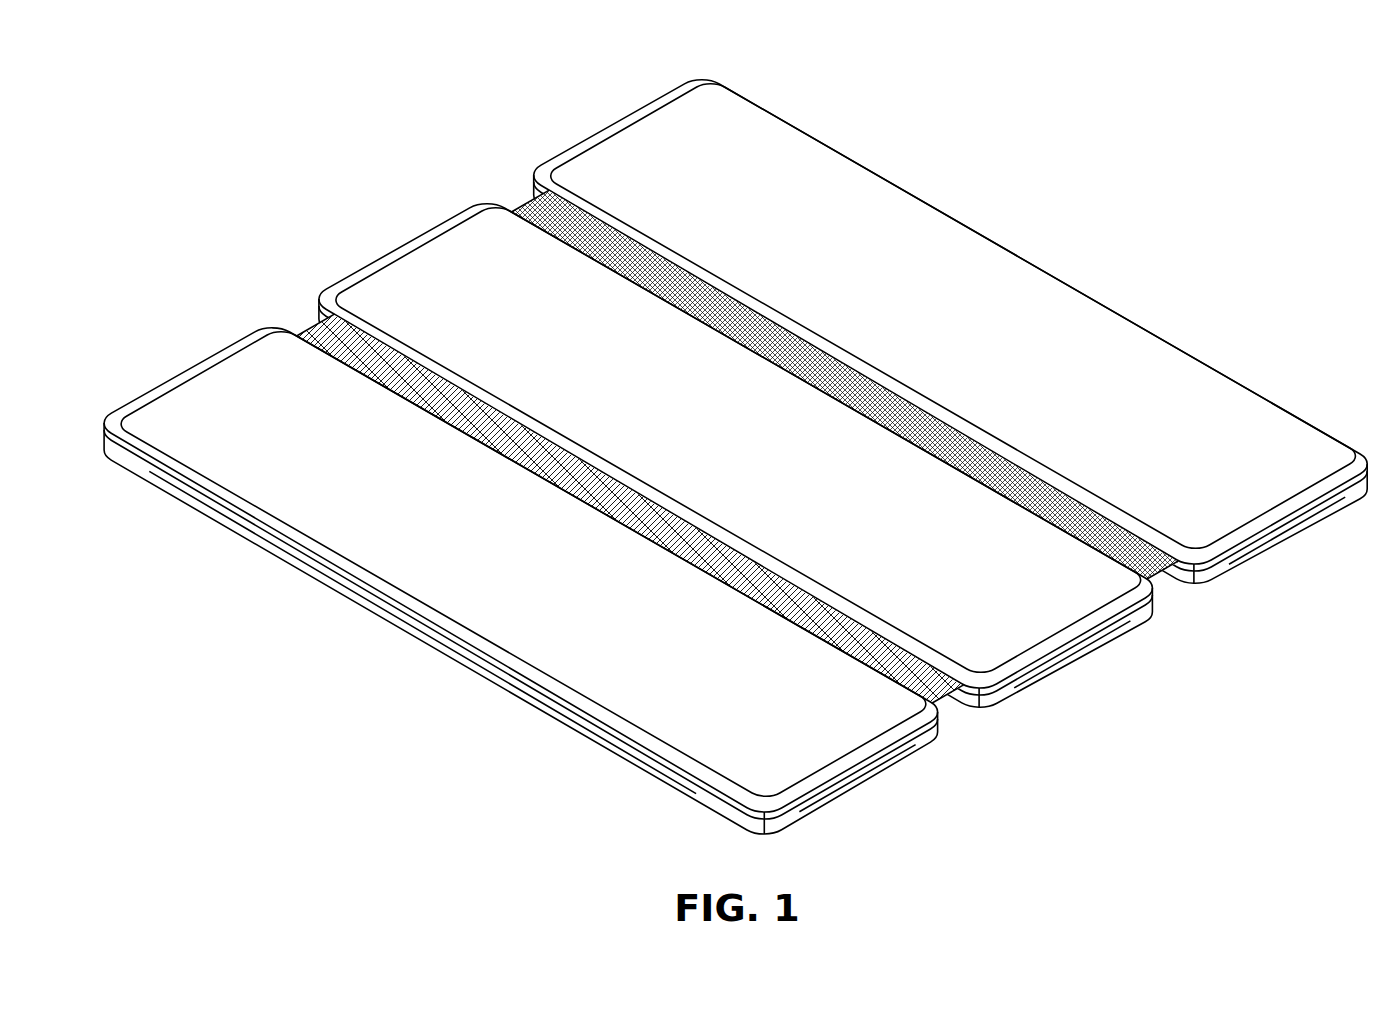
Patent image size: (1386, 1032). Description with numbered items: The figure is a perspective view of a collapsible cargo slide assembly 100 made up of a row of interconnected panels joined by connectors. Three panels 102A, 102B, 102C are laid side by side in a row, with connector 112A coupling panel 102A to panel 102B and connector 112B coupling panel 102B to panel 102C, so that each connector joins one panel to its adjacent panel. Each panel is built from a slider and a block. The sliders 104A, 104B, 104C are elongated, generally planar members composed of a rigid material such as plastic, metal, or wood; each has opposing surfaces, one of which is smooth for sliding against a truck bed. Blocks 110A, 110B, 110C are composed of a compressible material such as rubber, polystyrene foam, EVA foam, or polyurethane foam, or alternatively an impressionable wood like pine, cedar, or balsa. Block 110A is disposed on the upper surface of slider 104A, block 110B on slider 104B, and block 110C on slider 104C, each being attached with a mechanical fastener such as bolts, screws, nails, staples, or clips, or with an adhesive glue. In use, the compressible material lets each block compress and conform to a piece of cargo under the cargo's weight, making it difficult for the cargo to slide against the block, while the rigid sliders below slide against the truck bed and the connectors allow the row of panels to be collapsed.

The collapsible cargo slide assembly 100 is at (731, 447).
The panel 102A is at (143, 396).
The panel 102B is at (360, 275).
The panel 102C is at (575, 152).
The slider 104A is at (860, 787).
The slider 104B is at (1074, 663).
The slider 104C is at (1292, 538).
The block 110A is at (237, 349).
The block 110B is at (451, 223).
The block 110C is at (667, 100).
The connector 112A is at (944, 699).
The connector 112B is at (1161, 574).